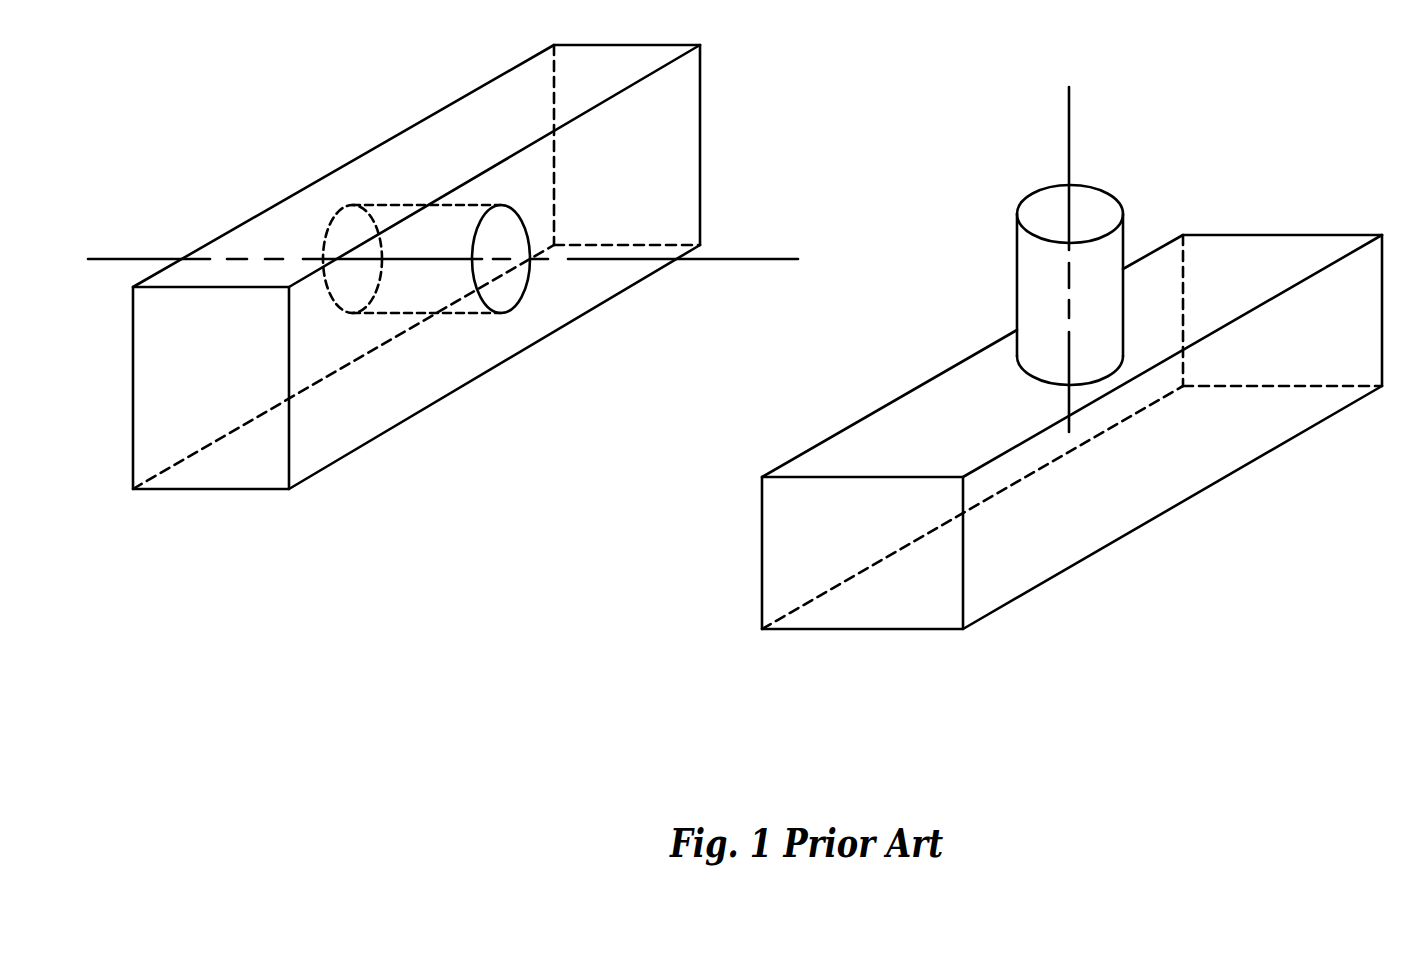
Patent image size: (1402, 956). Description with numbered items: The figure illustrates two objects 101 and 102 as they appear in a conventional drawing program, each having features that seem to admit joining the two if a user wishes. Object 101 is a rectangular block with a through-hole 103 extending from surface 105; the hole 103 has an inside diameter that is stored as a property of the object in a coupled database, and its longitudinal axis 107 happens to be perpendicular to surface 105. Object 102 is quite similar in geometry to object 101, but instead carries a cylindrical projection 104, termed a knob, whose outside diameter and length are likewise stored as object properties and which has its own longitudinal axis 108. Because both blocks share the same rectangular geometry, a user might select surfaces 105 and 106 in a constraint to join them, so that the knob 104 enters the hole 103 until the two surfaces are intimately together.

The object 101 is at (461, 265).
The object 102 is at (1072, 407).
The through-hole 103 is at (497, 283).
The projection 104 is at (1027, 262).
The surface 105 is at (665, 182).
The surface 106 is at (878, 442).
The longitudinal axis 107 is at (735, 258).
The longitudinal axis 108 is at (1068, 150).